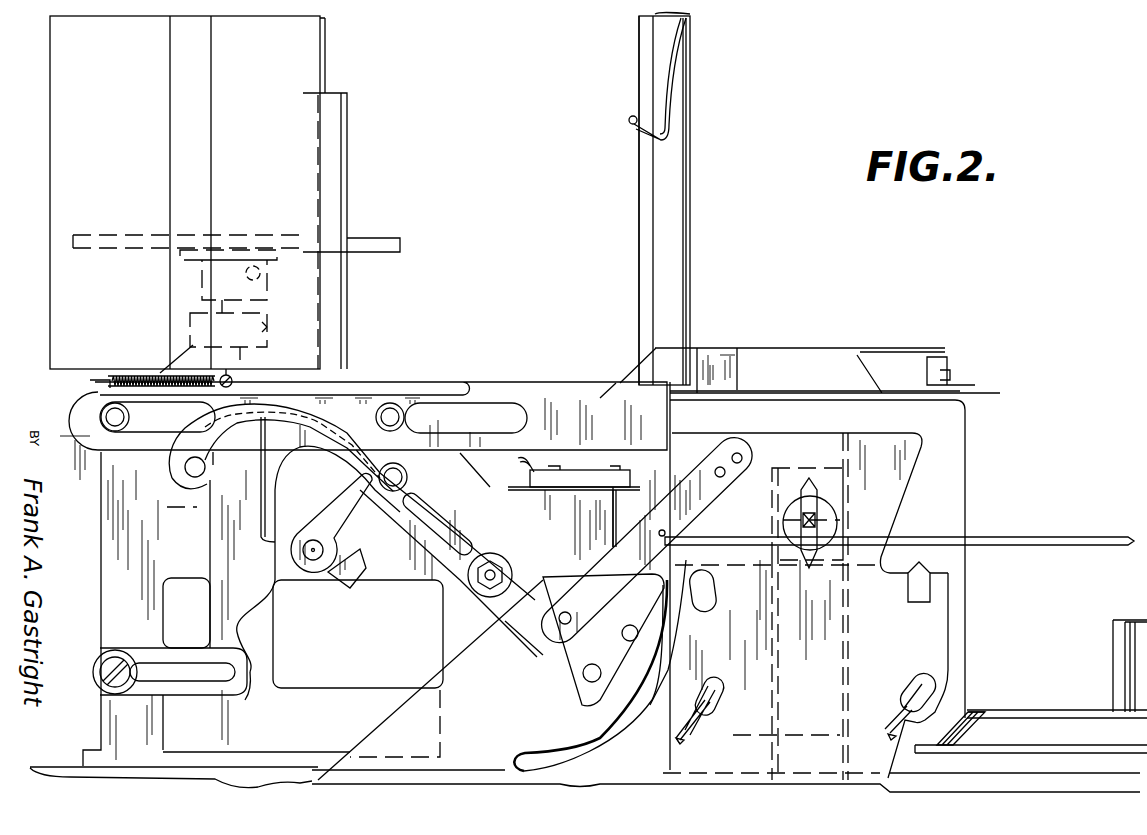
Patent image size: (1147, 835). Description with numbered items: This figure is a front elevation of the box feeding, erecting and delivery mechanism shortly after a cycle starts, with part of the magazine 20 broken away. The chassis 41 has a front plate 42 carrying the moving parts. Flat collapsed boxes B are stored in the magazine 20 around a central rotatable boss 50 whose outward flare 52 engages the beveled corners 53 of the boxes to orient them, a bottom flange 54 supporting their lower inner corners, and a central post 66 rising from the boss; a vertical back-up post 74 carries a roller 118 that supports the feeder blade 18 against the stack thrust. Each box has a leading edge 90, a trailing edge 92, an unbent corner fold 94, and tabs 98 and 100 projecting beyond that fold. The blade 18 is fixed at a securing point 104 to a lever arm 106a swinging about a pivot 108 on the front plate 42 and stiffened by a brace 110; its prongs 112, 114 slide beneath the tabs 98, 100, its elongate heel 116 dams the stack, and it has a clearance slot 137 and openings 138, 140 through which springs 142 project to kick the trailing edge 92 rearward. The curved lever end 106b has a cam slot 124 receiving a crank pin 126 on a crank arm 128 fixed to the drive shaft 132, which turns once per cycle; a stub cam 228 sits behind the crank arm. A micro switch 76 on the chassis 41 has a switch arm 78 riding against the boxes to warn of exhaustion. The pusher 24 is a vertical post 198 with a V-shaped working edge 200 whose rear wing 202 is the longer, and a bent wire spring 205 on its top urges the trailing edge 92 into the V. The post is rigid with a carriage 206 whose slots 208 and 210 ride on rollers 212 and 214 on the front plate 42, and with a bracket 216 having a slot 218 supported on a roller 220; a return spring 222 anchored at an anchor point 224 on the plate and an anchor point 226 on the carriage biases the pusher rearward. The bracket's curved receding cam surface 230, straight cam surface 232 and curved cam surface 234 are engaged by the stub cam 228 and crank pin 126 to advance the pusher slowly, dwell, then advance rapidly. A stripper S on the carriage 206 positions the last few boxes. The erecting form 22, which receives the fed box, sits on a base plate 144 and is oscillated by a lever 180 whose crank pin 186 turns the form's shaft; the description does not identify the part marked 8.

The erecting form 22 is at (46, 182).
The base plate 144 is at (370, 228).
The crank pin 186 is at (265, 276).
The lever 180 is at (246, 335).
The return spring 222 is at (133, 377).
The spring anchor on chassis plate 224 is at (234, 379).
The spring anchor on carriage 226 is at (76, 410).
The roller 214 is at (122, 414).
The slot 210 is at (157, 417).
The roller 212 is at (406, 419).
The slot 208 is at (466, 418).
The carriage 206 is at (558, 385).
The front plate 42 is at (108, 527).
The bracket 216 is at (212, 520).
The straight cam surface 232 is at (261, 530).
The curved receding cam surface 230 is at (243, 626).
The curved cam surface 234 is at (253, 694).
The slot 218 is at (190, 668).
The roller 220 is at (97, 688).
The stub cam 228 is at (380, 590).
The crank arm 128 is at (345, 500).
The drive shaft 132 is at (318, 545).
The crank pin 126 is at (409, 473).
The cam slot 124 is at (445, 516).
The pivot 108 is at (500, 560).
The lever end 106b is at (428, 538).
The lever arm 106a is at (498, 600).
The heel 116 is at (422, 740).
The base 8 is at (585, 779).
The micro switch 76 is at (550, 506).
The stripper S is at (656, 430).
The switch arm 78 is at (634, 486).
The chassis 41 is at (616, 518).
The brace 110 is at (712, 470).
The tab 100 is at (676, 530).
The blade securing point 104 is at (598, 658).
The clearance slot 137 is at (646, 700).
The pusher 24 is at (705, 178).
The rear wing 202 is at (643, 208).
The V-shaped working edge 200 is at (650, 253).
The vertical post 198 is at (674, 221).
The bent wire spring 205 is at (672, 115).
The leading edge 90 is at (962, 402).
The blade 18 is at (892, 498).
The collapsed box B is at (810, 503).
The roller 118 is at (812, 500).
The corner fold 94 is at (958, 560).
The tab 98 is at (960, 572).
The prong 112 is at (908, 582).
The prong 114 is at (721, 590).
The opening 140 is at (712, 706).
The springs 142 is at (694, 724).
The trailing edge 92 is at (691, 746).
The back-up post 74 is at (778, 762).
The opening 138 is at (912, 692).
The central post 66 is at (1115, 635).
The central rotatable boss 50 is at (1058, 708).
The magazine 20 is at (1018, 664).
The bottom flange 54 is at (965, 752).
The beveled corners 53 is at (950, 732).
The outward flare 52 is at (972, 718).